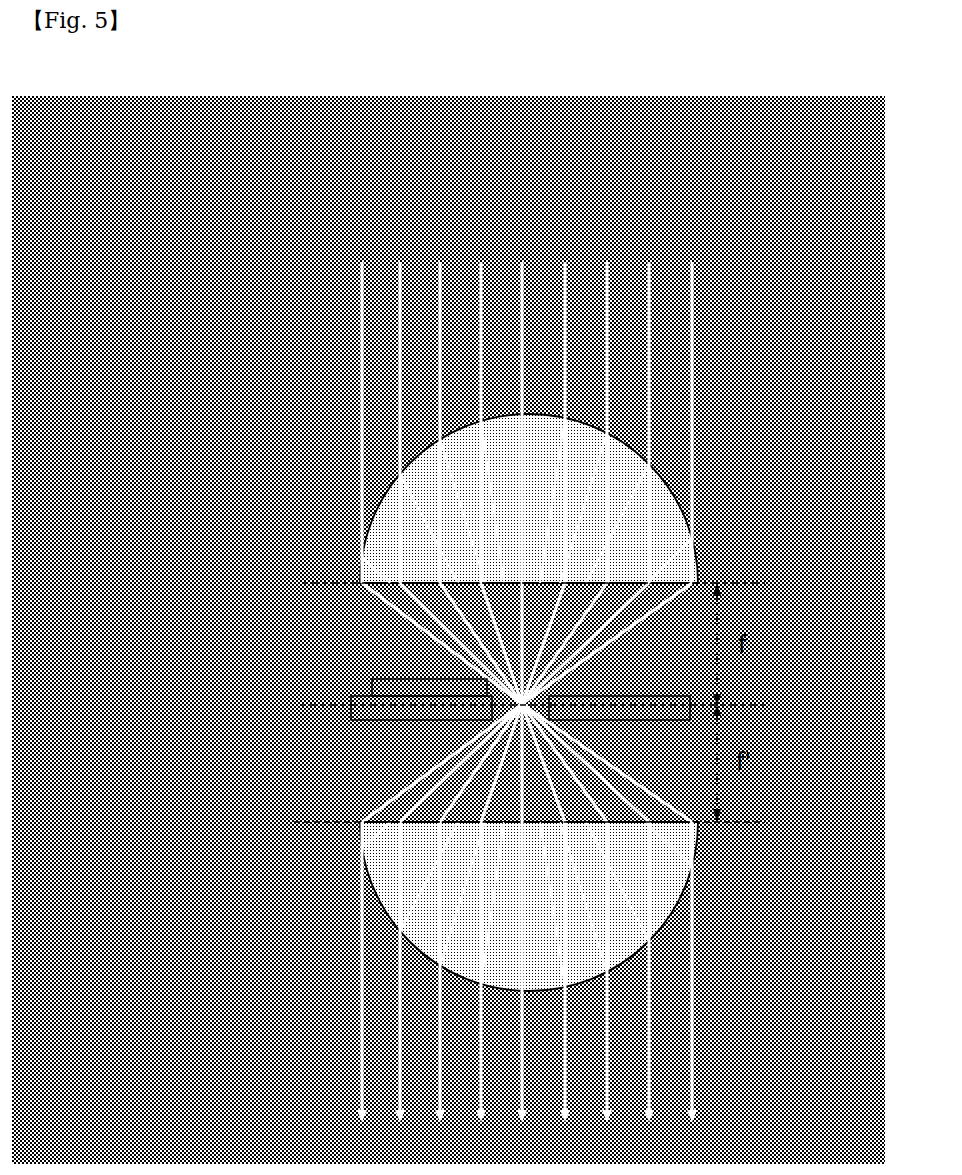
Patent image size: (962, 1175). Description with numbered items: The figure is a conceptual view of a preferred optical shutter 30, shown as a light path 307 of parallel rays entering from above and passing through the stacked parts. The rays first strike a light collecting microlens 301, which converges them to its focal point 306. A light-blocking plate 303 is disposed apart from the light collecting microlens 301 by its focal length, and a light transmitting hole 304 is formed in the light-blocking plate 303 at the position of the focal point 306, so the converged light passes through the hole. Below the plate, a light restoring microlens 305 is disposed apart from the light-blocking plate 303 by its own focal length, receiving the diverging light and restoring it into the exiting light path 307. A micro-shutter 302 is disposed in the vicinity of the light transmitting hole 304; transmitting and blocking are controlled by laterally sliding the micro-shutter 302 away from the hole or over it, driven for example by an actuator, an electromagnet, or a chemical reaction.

The optical shutter 30 is at (448, 630).
The light collecting microlens 301 is at (362, 561).
The micro-shutter 302 is at (372, 684).
The light-blocking plate 303 is at (351, 718).
The light transmitting hole 304 is at (492, 722).
The light restoring microlens 305 is at (360, 832).
The focal point 306 is at (553, 725).
The light path 307 is at (534, 667).